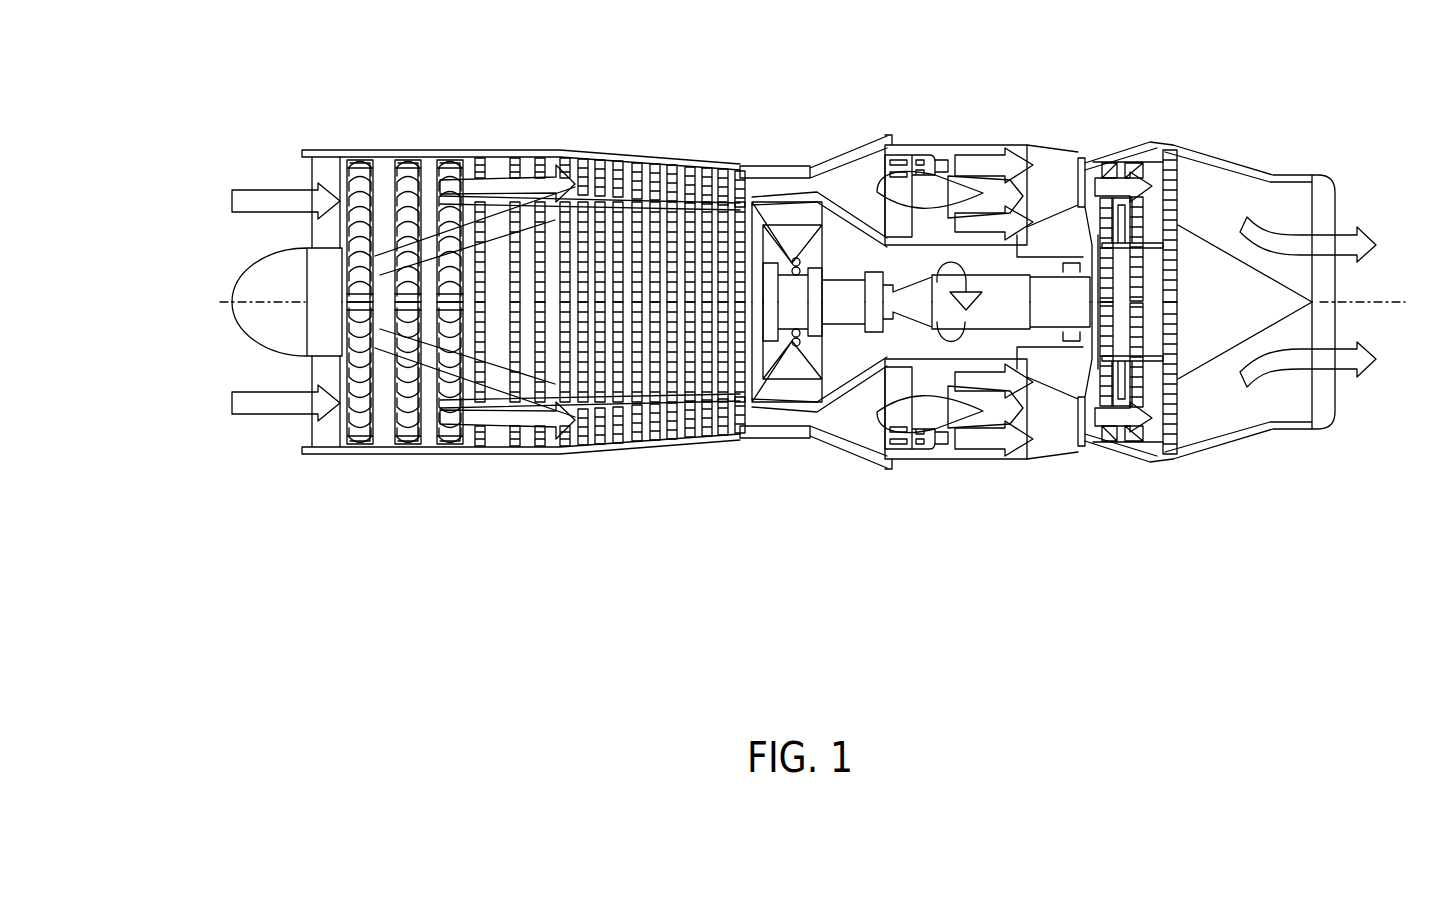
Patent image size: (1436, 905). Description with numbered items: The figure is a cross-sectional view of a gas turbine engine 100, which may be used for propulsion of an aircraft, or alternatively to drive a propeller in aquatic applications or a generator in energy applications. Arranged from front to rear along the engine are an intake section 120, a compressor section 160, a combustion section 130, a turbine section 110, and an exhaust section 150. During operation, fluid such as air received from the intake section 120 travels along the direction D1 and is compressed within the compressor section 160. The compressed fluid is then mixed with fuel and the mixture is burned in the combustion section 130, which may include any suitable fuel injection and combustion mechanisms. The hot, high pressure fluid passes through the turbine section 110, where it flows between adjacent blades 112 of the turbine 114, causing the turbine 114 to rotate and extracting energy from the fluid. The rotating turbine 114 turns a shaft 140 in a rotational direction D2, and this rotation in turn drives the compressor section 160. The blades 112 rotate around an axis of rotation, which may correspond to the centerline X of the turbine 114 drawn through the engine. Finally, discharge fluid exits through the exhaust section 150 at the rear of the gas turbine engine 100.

The gas turbine engine 100 is at (759, 334).
The turbine section 110 is at (1152, 162).
The blades 112 is at (1180, 263).
The turbine 114 is at (1200, 320).
The intake section 120 is at (287, 436).
The combustion section 130 is at (1043, 180).
The shaft 140 is at (1003, 303).
The exhaust section 150 is at (1330, 215).
The compressor section 160 is at (593, 158).
The direction D1 is at (247, 203).
The rotational direction D2 is at (950, 270).
The centerline X is at (824, 301).